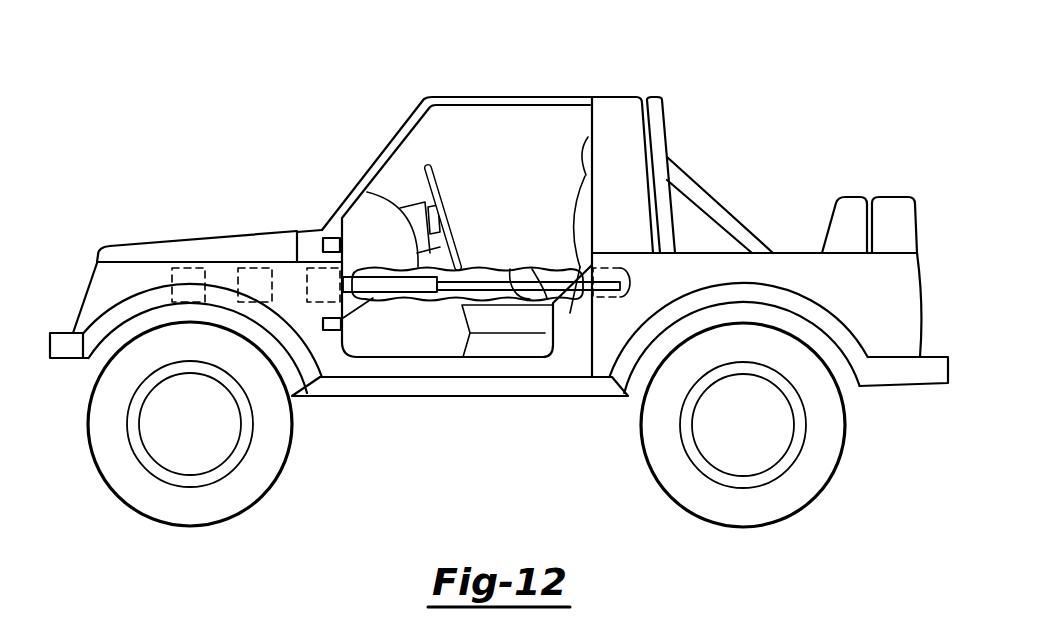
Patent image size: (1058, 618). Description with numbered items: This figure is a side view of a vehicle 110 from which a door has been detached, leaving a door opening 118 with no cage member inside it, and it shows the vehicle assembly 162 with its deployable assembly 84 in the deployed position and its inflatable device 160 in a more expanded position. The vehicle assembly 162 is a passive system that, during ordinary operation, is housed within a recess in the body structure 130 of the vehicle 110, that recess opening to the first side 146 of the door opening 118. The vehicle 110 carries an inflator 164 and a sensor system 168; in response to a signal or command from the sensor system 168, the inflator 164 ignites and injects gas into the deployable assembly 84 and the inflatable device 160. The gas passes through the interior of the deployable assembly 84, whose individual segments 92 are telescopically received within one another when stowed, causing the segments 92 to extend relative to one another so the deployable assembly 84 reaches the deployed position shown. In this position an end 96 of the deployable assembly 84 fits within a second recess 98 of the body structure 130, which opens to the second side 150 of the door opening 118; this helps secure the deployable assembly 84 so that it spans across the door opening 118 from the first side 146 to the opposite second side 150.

The vehicle 110 is at (822, 127).
The door opening 118 is at (502, 140).
The body structure 130 is at (120, 243).
The sensor system 168 is at (182, 273).
The inflator 164 is at (248, 277).
The inflatable device 160 is at (472, 265).
The segments 92 is at (536, 268).
The deployable assembly 84 is at (392, 293).
The end 96 is at (630, 272).
The second recess 98 is at (608, 310).
The first side 146 is at (363, 357).
The vehicle assembly 162 is at (430, 332).
The second side 150 is at (570, 313).